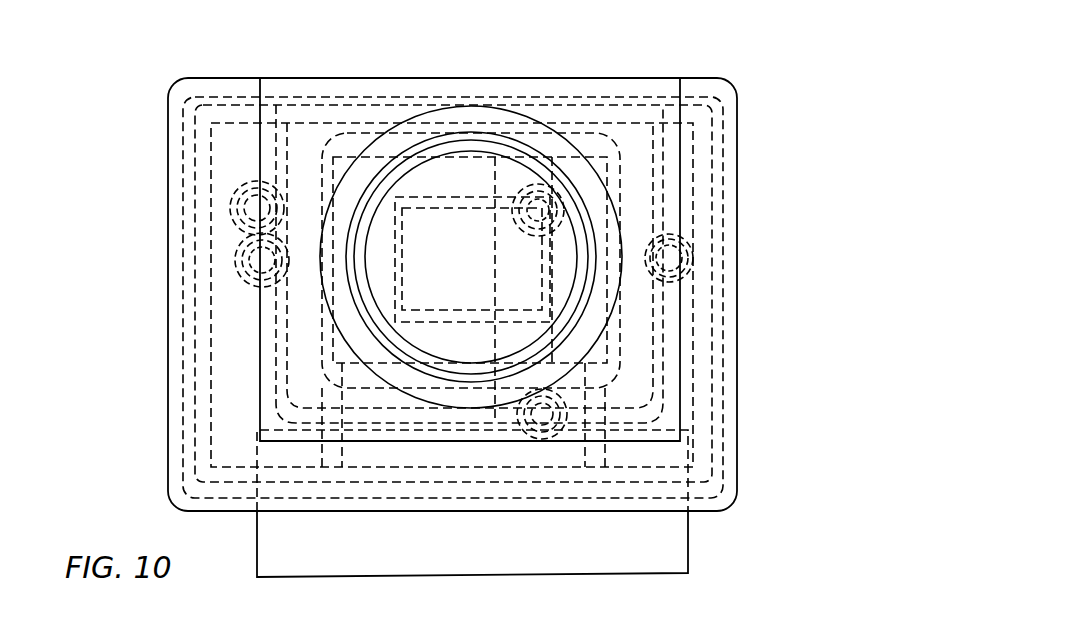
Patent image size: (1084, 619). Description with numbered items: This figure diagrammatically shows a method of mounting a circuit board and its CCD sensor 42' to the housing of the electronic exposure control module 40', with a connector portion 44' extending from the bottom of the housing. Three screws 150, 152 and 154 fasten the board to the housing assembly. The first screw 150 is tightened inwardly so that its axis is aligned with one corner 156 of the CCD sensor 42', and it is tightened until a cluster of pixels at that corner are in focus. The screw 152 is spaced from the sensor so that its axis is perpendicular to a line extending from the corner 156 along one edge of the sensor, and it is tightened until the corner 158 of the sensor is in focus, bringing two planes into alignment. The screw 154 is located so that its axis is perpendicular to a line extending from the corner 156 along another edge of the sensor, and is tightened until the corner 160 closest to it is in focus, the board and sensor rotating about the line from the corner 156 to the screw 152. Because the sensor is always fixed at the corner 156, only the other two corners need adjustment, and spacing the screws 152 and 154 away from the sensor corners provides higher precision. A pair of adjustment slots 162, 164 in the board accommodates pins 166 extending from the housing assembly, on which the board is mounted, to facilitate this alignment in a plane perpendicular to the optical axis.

The electronic exposure control module 40' is at (452, 269).
The CCD sensor 42' is at (470, 228).
The connector 44' is at (539, 503).
The screw 150 is at (526, 182).
The screw 152 is at (226, 193).
The screw 154 is at (572, 400).
The corner of the CCD sensor 156 is at (536, 212).
The corner of the sensor 158 is at (372, 176).
The corner of the sensor 160 is at (541, 305).
The adjustment slot 162 is at (694, 244).
The adjustment slot 164 is at (236, 258).
The pin 166 is at (258, 272).